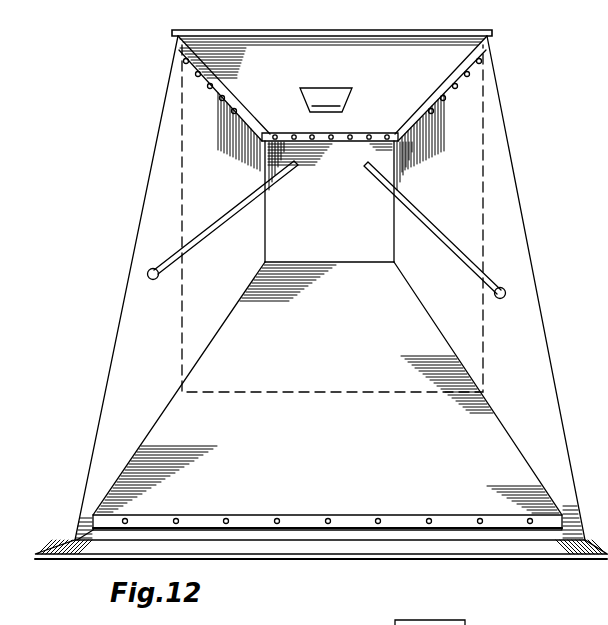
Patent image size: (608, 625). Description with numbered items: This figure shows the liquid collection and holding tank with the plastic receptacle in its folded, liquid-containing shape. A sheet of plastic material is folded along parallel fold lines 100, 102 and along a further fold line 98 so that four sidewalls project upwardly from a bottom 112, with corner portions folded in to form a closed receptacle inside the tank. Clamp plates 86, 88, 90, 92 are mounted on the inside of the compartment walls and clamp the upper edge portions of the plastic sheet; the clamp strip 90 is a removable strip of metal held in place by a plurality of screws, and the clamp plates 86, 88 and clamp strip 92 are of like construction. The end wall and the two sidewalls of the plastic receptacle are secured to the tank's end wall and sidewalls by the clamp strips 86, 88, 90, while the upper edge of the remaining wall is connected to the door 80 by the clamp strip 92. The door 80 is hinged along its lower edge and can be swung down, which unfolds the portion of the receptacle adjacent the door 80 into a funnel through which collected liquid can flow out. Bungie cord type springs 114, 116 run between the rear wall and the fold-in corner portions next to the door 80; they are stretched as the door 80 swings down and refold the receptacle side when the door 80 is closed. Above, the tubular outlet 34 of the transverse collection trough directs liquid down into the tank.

The door 80 is at (482, 553).
The clamp plate 86 is at (243, 80).
The clamp plate 88 is at (437, 106).
The clamp strip 90 is at (296, 163).
The tubular outlet 34 is at (323, 118).
The bungie cord type spring 114 is at (240, 210).
The bungie cord type spring 116 is at (428, 228).
The fold line 98 is at (182, 340).
The fold line 100 is at (443, 340).
The fold line 102 is at (230, 313).
The bottom 112 is at (325, 335).
The clamp strip 92 is at (350, 515).